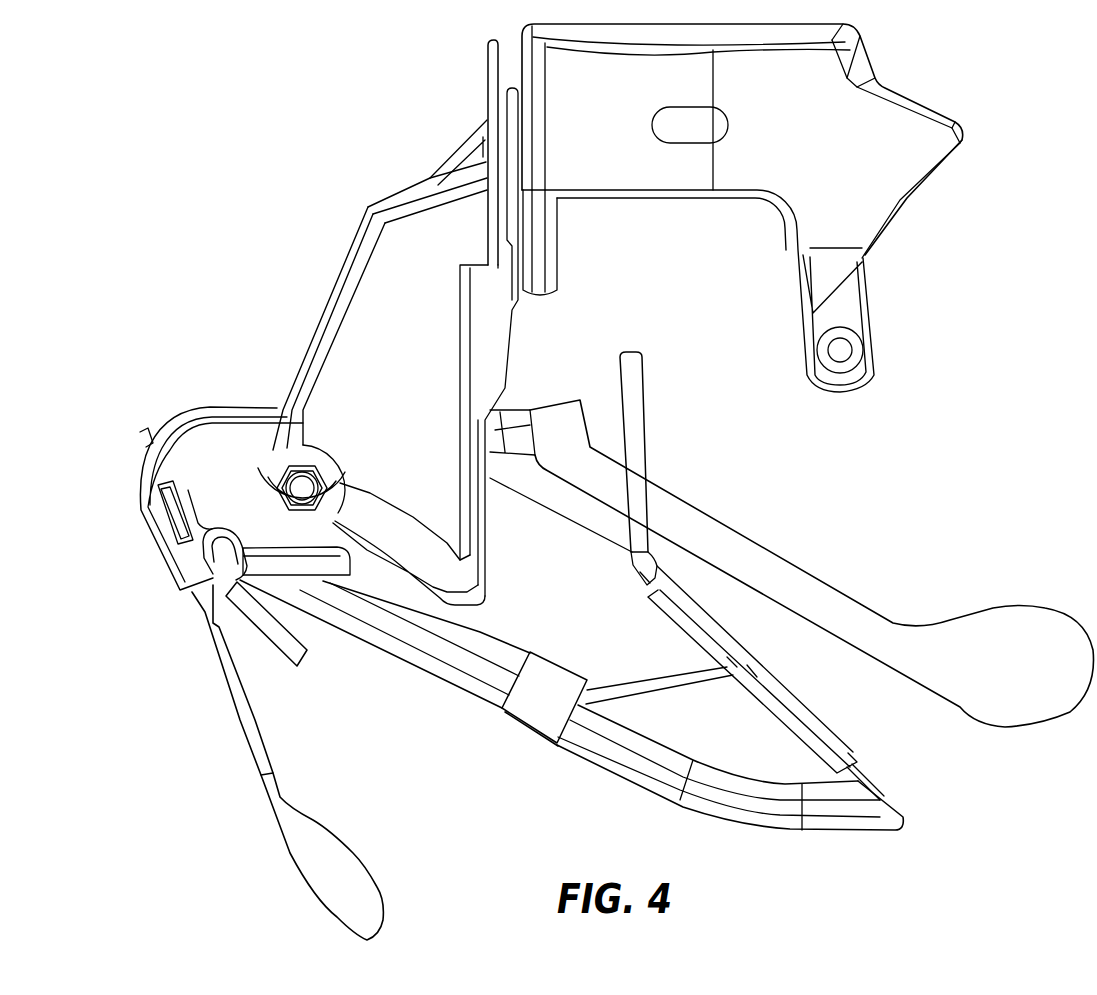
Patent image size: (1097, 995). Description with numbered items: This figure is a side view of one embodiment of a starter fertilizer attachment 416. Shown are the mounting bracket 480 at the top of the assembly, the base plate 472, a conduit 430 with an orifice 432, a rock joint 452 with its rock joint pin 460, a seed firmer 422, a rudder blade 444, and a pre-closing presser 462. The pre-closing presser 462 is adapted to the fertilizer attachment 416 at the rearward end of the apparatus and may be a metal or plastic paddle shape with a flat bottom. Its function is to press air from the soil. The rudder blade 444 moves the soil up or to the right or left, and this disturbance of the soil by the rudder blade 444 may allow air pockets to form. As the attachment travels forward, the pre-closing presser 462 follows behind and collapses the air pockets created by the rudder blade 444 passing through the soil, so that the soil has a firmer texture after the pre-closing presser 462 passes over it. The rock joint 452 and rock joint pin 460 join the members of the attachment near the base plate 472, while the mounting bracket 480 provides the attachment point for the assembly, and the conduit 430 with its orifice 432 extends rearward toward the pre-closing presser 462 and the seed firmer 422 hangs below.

The fertilizer attachment 416 is at (220, 305).
The seed firmer 422 is at (323, 862).
The conduit 430 is at (645, 420).
The orifice 432 is at (870, 772).
The rudder blade 444 is at (622, 643).
The rock joint 452 is at (291, 484).
The rock joint pin 460 is at (302, 500).
The pre-closing presser 462 is at (1030, 637).
The base plate 472 is at (323, 292).
The mounting bracket 480 is at (912, 100).